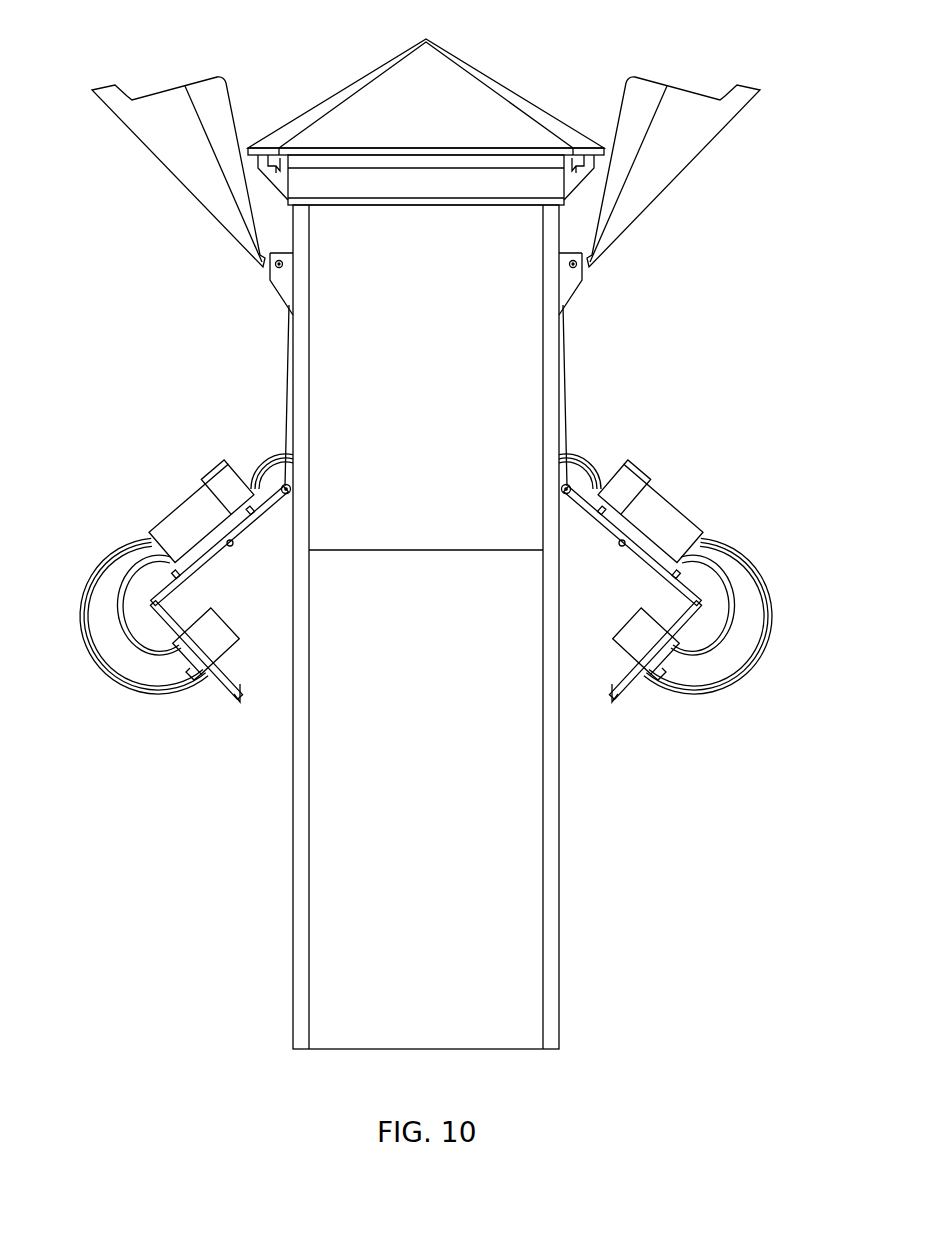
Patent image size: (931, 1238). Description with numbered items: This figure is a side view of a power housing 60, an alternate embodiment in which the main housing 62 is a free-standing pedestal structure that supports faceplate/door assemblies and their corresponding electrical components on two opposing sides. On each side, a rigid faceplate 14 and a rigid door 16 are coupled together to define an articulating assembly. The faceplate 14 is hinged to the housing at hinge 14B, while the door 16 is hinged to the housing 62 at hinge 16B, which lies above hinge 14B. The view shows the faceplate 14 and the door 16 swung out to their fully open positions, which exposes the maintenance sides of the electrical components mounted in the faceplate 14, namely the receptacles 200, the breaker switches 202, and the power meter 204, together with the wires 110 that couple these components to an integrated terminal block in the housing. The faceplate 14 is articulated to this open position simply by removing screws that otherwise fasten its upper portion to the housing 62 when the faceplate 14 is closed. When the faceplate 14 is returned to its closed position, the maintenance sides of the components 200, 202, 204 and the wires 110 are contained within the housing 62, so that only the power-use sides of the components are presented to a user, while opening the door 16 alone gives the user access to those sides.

The faceplate 14 is at (176, 592).
The hinge 14B is at (281, 495).
The door 16 is at (195, 163).
The hinge 16B is at (267, 267).
The power housing 60 is at (698, 323).
The main housing 62 is at (559, 845).
The wires 110 is at (97, 575).
The receptacles 200 is at (227, 635).
The breaker switches 202 is at (425, 487).
The power meter 204 is at (190, 497).